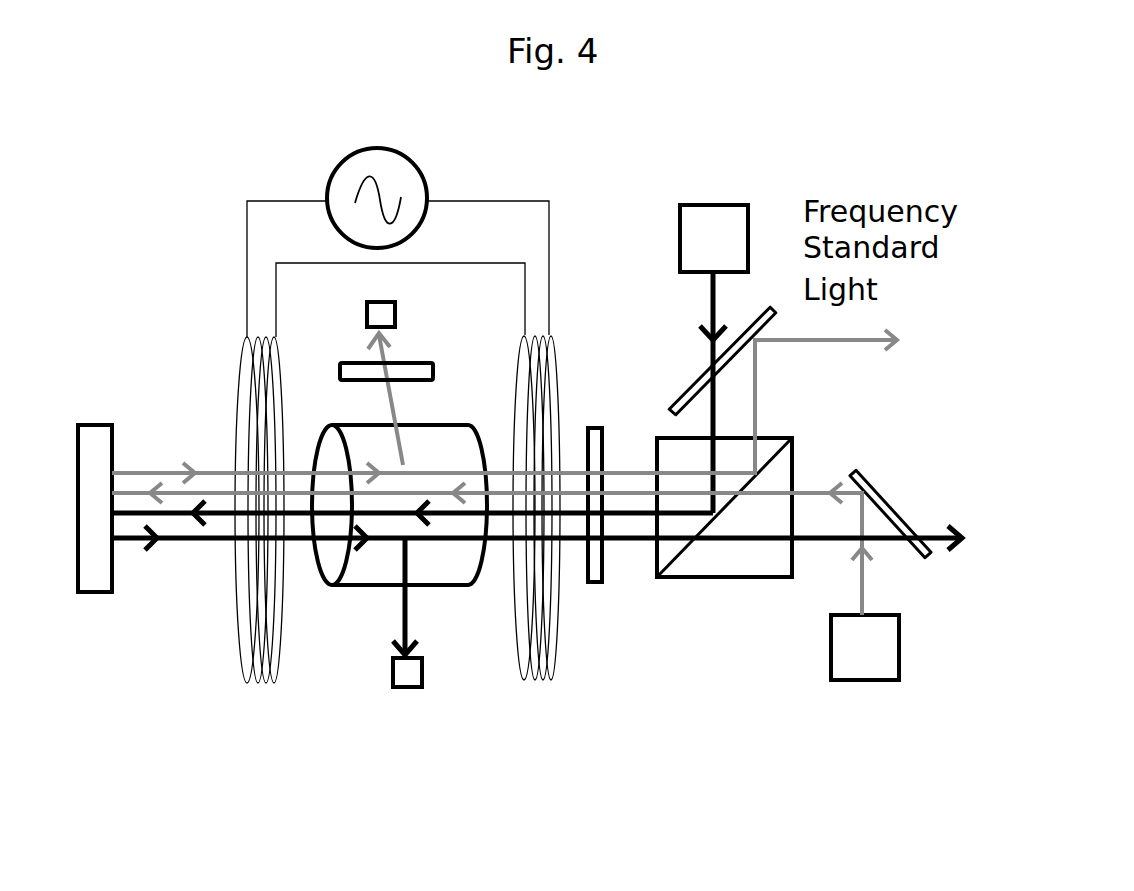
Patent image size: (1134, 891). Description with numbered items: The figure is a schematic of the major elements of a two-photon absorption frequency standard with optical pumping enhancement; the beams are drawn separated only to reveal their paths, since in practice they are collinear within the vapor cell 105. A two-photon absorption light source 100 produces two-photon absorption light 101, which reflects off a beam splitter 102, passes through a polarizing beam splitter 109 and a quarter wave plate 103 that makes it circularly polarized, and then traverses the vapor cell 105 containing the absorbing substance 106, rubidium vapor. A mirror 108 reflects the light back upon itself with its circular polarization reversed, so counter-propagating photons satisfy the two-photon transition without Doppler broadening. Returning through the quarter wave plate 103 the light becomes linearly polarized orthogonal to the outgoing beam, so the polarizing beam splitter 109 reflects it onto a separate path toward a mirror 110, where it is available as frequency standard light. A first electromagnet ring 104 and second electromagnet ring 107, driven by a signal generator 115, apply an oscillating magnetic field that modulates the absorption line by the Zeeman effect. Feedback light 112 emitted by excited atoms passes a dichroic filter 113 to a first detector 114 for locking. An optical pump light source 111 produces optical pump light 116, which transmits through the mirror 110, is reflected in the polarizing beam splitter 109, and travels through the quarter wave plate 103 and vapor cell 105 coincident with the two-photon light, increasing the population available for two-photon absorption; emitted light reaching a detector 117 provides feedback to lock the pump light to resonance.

The two-photon absorption light source 100 is at (862, 689).
The two-photon absorption light 101 is at (157, 465).
The beam splitter 102 is at (878, 482).
The quarter wave plate 103 is at (606, 588).
The first electromagnet ring 104 is at (558, 678).
The vapor cell 105 is at (315, 427).
The absorbing substance 106 is at (378, 568).
The second electromagnet ring 107 is at (280, 683).
The mirror 108 is at (97, 598).
The polarizing beam splitter 109 is at (732, 583).
The mirror 110 is at (665, 402).
The optical pump light source 111 is at (675, 203).
The feedback light 112 is at (405, 411).
The dichroic filter 113 is at (420, 355).
The first detector 114 is at (398, 309).
The signal generator 115 is at (408, 151).
The optical pump light 116 is at (703, 310).
The detector 117 is at (427, 693).